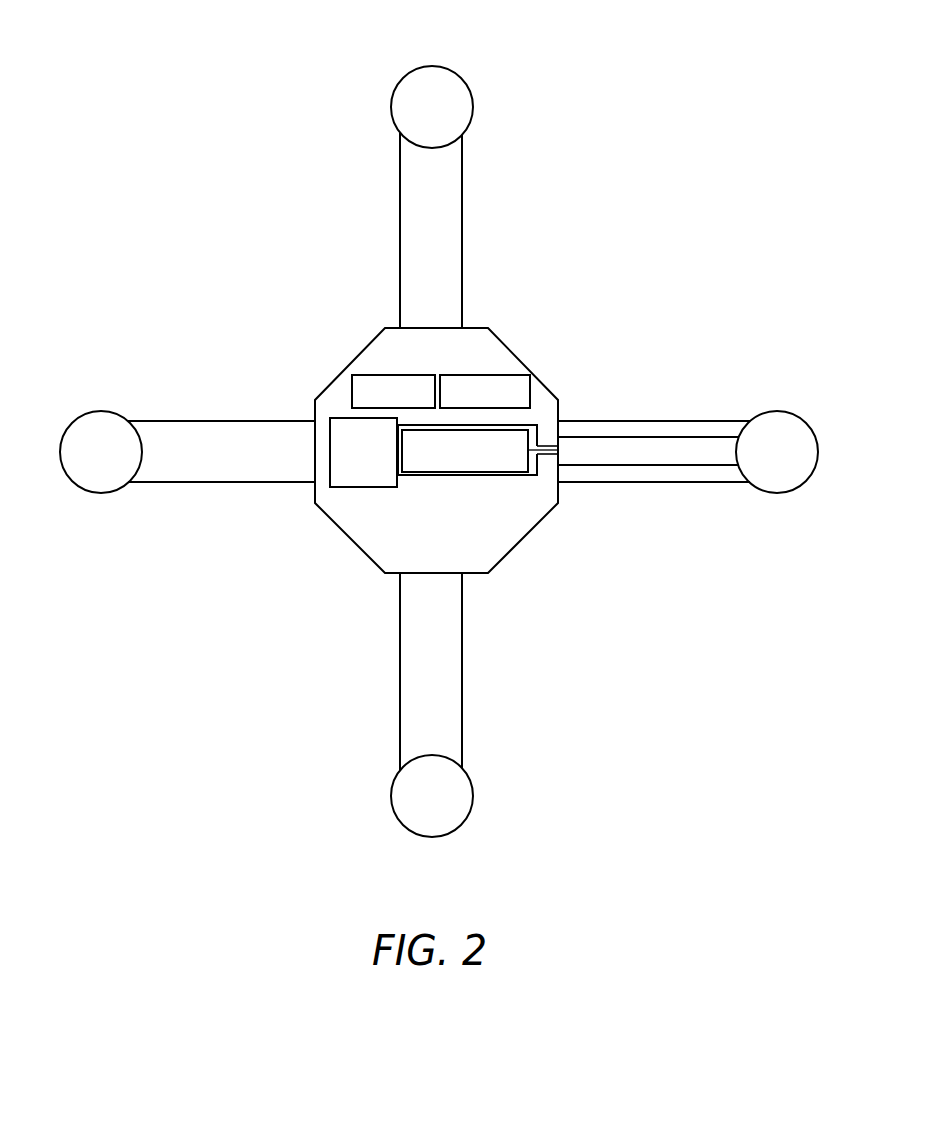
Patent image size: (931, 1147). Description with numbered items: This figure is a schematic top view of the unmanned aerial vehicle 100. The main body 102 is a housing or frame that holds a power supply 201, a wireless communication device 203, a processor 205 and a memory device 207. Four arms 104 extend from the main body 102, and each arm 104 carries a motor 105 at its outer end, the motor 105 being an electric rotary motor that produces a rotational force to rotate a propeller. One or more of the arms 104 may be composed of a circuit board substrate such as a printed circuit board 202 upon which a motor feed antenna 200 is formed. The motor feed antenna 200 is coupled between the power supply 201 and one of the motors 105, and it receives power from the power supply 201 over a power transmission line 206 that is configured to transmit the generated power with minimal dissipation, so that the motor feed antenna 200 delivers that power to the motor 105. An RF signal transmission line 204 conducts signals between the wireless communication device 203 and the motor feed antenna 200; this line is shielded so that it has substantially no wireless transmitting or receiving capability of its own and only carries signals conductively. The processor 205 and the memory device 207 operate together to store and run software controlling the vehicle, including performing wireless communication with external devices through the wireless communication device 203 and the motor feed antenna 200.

The unmanned aerial vehicle 100 is at (196, 146).
The main body 102 is at (527, 538).
The arm 104 is at (400, 255).
The motor 105 is at (455, 70).
The motor feed antenna 200 is at (648, 420).
The power supply 201 is at (350, 418).
The printed circuit board 202 is at (690, 428).
The wireless communication device 203 is at (415, 425).
The RF signal transmission line 204 is at (545, 452).
The processor 205 is at (455, 375).
The power transmission line 206 is at (528, 422).
The memory device 207 is at (425, 375).